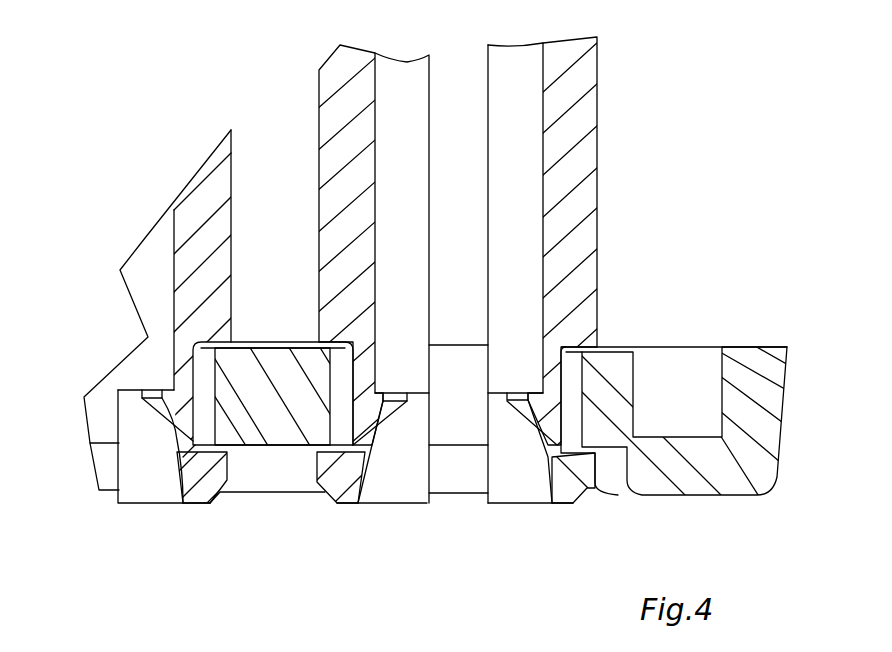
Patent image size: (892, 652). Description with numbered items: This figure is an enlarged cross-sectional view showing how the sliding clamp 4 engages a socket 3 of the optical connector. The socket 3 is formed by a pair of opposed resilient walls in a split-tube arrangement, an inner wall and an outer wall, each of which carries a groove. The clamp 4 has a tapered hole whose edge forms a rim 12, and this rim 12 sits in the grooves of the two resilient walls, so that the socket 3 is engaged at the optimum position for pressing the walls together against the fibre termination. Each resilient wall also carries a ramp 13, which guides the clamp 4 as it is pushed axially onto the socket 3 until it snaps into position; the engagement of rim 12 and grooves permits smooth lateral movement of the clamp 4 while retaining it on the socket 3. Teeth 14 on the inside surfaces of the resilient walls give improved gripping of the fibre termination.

The socket 3 is at (86, 233).
The sliding clamp 4 is at (652, 514).
The rim 12 is at (285, 447).
The ramp 13 is at (217, 503).
The teeth 14 is at (393, 423).